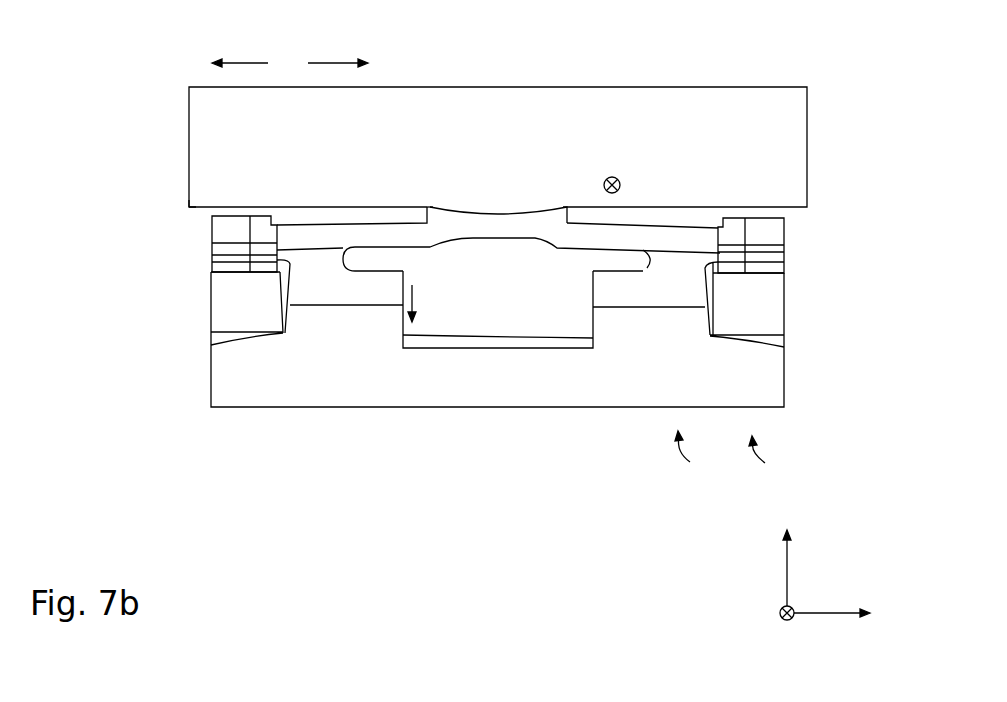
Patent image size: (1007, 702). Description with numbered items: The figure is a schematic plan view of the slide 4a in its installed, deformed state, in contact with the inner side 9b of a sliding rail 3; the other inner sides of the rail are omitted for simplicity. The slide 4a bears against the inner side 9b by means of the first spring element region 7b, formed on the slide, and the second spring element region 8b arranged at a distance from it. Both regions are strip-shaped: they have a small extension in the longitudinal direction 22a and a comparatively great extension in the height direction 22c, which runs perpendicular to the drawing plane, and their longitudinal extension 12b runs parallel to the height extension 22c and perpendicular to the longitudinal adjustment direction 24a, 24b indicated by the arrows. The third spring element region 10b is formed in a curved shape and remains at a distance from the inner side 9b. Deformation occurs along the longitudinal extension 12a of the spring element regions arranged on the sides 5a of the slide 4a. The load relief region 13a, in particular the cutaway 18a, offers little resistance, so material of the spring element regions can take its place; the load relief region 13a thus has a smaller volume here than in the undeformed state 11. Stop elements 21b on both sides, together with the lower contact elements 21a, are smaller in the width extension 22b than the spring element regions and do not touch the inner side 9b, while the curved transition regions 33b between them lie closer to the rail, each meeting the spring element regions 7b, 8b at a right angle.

The sliding rail 3 is at (632, 104).
The slide 4a is at (684, 461).
The side of the slide 5a is at (229, 389).
The first spring element region 7b is at (436, 207).
The second spring element region 8b is at (566, 207).
The inner side of the sliding rail 9b is at (190, 208).
The third spring element region 10b is at (497, 213).
The undeformed state 11 is at (764, 466).
The longitudinal extension of the spring element regions 12a is at (412, 300).
The longitudinal extension of the first and second spring element regions 12b is at (613, 177).
The load relief region 13a is at (603, 264).
The cutaway 18a is at (649, 264).
The lower contact element 21a is at (270, 322).
The stop element 21b is at (241, 217).
The longitudinal direction 22a is at (823, 613).
The width extension 22b is at (787, 562).
The height extension 22c is at (778, 613).
The longitudinal adjustment direction 24a is at (336, 62).
The longitudinal adjustment direction 24b is at (246, 62).
The transition region 33b is at (329, 223).